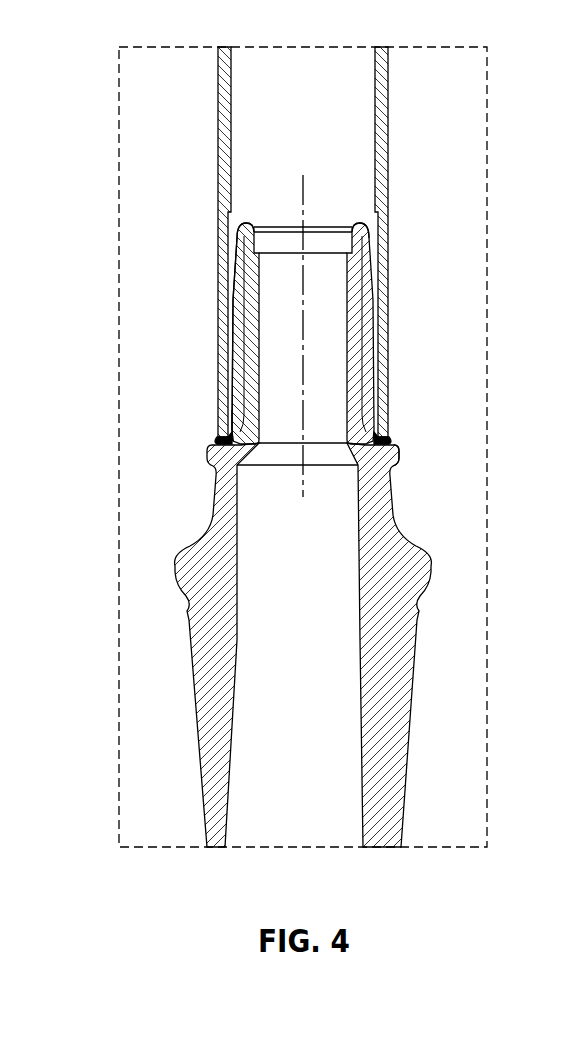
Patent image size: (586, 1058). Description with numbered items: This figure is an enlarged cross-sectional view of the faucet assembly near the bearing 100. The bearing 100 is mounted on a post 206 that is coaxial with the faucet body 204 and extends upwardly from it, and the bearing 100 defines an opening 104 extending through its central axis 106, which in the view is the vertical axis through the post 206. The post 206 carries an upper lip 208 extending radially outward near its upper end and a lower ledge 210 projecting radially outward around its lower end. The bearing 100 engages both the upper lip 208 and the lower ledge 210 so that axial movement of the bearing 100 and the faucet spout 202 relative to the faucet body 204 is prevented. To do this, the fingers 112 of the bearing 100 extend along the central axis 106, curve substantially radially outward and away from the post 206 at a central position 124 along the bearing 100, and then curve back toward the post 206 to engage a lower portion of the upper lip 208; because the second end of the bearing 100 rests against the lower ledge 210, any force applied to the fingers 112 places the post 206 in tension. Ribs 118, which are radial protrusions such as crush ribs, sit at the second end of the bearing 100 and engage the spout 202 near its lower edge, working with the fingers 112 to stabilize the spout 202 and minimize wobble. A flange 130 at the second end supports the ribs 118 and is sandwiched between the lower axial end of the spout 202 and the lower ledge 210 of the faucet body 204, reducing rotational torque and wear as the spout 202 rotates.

The bearing 100 is at (252, 366).
The opening 104 is at (297, 338).
The central axis 106 is at (304, 226).
The fingers 112 is at (367, 328).
The ribs 118 is at (233, 421).
The central position 124 is at (239, 302).
The flange 130 is at (219, 442).
The faucet spout 202 is at (458, 97).
The faucet body 204 is at (456, 645).
The post 206 is at (238, 233).
The upper lip 208 is at (364, 229).
The lower ledge 210 is at (394, 449).